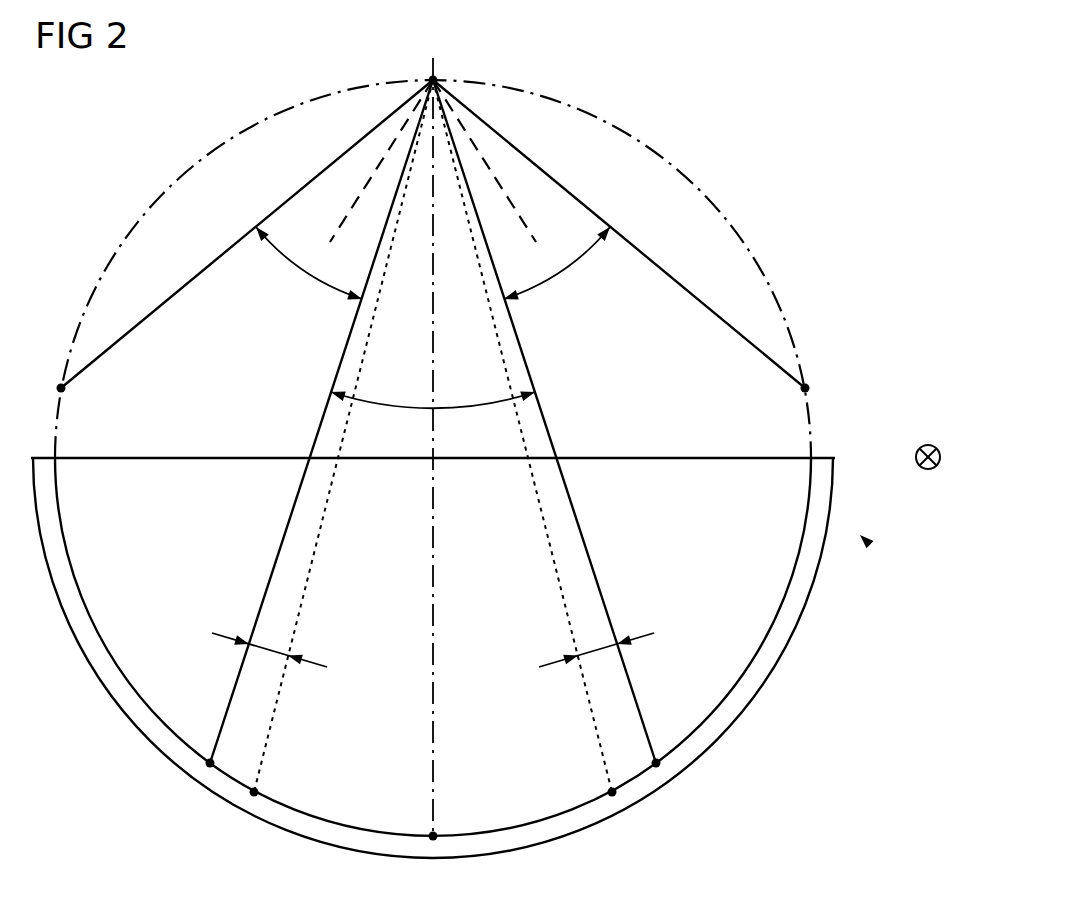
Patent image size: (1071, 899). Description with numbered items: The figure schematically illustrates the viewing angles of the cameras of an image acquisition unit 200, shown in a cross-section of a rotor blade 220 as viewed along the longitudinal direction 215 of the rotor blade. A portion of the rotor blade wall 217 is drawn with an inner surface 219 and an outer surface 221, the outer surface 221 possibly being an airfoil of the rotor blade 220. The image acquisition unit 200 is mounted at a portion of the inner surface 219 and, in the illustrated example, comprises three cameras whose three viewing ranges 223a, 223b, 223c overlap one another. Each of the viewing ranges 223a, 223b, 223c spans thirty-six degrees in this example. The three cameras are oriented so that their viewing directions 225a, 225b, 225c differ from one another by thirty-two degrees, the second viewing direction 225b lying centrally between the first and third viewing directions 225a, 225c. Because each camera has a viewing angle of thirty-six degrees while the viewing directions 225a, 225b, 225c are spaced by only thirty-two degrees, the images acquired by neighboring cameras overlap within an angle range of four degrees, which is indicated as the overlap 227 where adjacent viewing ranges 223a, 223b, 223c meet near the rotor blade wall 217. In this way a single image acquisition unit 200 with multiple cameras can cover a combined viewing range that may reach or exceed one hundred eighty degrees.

The image acquisition unit 200 is at (626, 90).
The longitudinal direction of the rotor blade 215 is at (930, 444).
The rotor blade wall 217 is at (798, 605).
The inner surface 219 is at (680, 170).
The rotor blade 220 is at (872, 546).
The outer surface 221 is at (793, 637).
The first viewing range 223a is at (310, 278).
The second viewing range 223b is at (410, 403).
The third viewing range 223c is at (567, 274).
The first viewing direction 225a is at (373, 174).
The second viewing direction 225b is at (434, 270).
The third viewing direction 225c is at (493, 174).
The overlap 227 is at (272, 653).